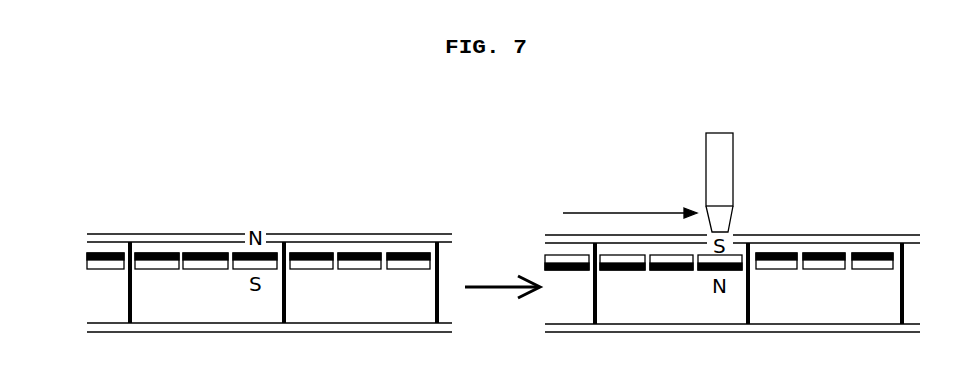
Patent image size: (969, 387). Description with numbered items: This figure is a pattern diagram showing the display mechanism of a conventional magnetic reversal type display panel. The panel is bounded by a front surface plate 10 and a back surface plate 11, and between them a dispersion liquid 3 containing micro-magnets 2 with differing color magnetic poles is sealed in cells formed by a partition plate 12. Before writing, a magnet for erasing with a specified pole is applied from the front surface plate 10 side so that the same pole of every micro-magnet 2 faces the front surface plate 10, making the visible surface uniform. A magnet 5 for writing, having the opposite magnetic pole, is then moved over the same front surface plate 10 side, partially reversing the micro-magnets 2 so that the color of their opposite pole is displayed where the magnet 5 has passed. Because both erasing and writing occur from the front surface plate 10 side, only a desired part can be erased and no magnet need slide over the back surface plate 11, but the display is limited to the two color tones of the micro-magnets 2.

The micro-magnet 2 is at (108, 272).
The dispersion liquid 3 is at (415, 298).
The magnet for writing 5 is at (718, 162).
The front surface plate 10 is at (345, 240).
The back surface plate 11 is at (255, 330).
The partition plate 12 is at (439, 309).